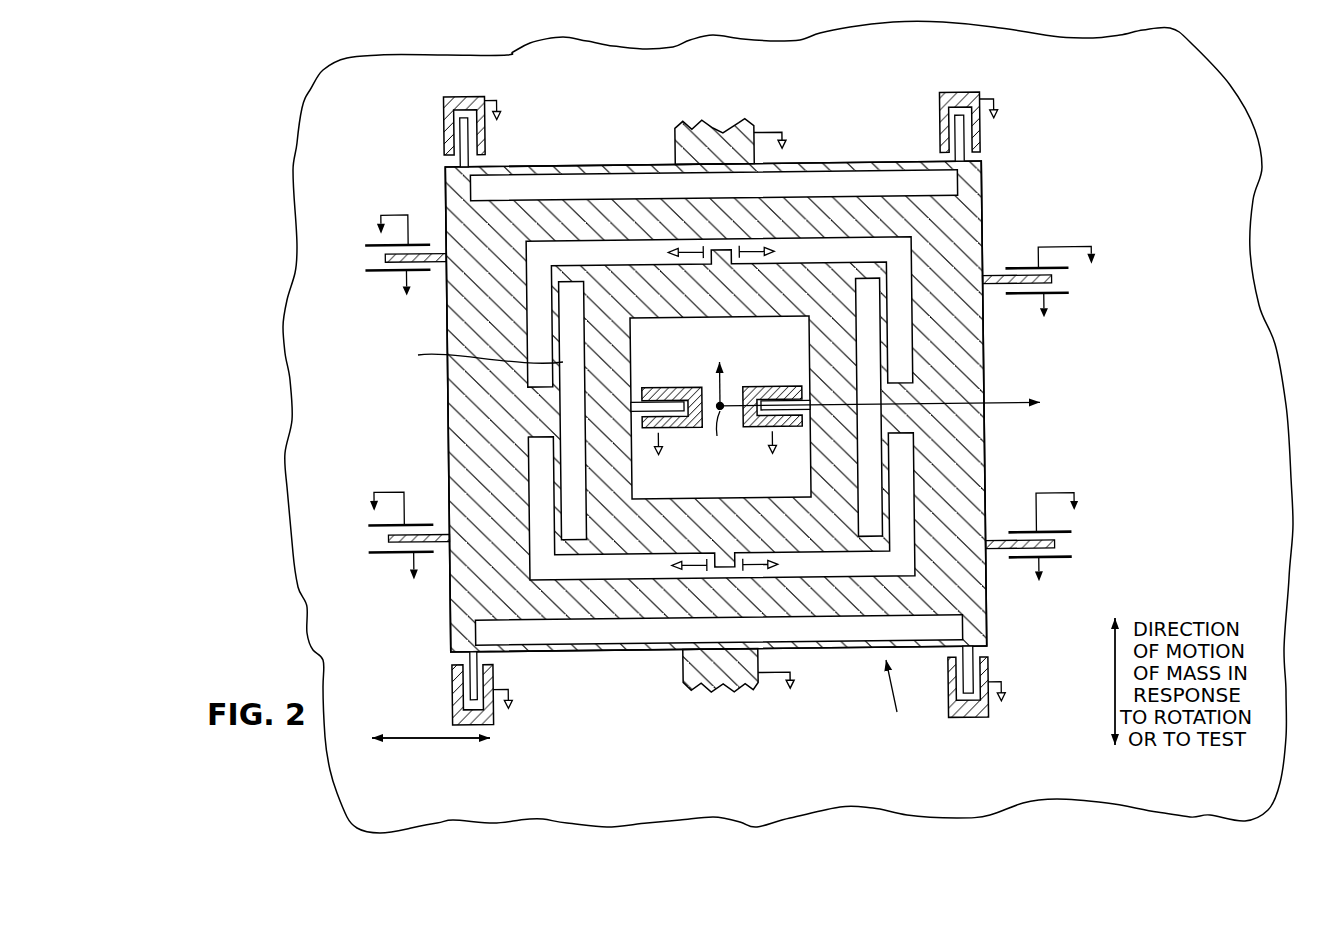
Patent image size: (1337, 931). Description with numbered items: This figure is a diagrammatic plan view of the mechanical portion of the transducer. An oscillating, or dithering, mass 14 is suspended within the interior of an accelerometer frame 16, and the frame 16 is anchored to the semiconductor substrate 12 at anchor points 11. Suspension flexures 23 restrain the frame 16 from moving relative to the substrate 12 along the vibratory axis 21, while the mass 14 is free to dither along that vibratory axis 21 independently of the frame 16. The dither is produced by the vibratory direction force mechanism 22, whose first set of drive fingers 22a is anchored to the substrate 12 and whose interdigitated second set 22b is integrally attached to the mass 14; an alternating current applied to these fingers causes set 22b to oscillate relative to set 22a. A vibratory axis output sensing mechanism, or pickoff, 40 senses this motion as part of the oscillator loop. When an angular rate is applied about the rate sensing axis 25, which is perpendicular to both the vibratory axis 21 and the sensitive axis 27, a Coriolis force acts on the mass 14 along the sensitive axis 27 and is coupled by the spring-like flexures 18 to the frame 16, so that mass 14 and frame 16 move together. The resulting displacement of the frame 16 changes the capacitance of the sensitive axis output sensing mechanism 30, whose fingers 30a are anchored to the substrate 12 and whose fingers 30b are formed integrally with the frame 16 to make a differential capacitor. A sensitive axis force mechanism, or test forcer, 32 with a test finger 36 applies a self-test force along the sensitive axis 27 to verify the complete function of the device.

The anchor point 11 is at (293, 171).
The semiconductor substrate 12 is at (897, 76).
The dithering mass 14 is at (801, 540).
The accelerometer frame 16 is at (966, 213).
The suspension flexure 18 is at (568, 282).
The vibratory axis 21 is at (1026, 410).
The vibratory direction force mechanism 22 is at (687, 363).
The first set of drive fingers 22a is at (665, 387).
The second set of drive fingers 22b is at (654, 430).
The suspension flexure 23 is at (574, 170).
The rate sensing axis 25 is at (718, 455).
The sensitive axis 27 is at (717, 370).
The sensitive axis output sensing mechanism 30 is at (346, 271).
The first set of output fingers 30a is at (378, 243).
The second set of output fingers 30b is at (387, 258).
The sensitive axis force mechanism 32 is at (432, 103).
The test finger electrode 36 is at (1018, 94).
The vibratory axis output sensing mechanism 40 is at (723, 236).